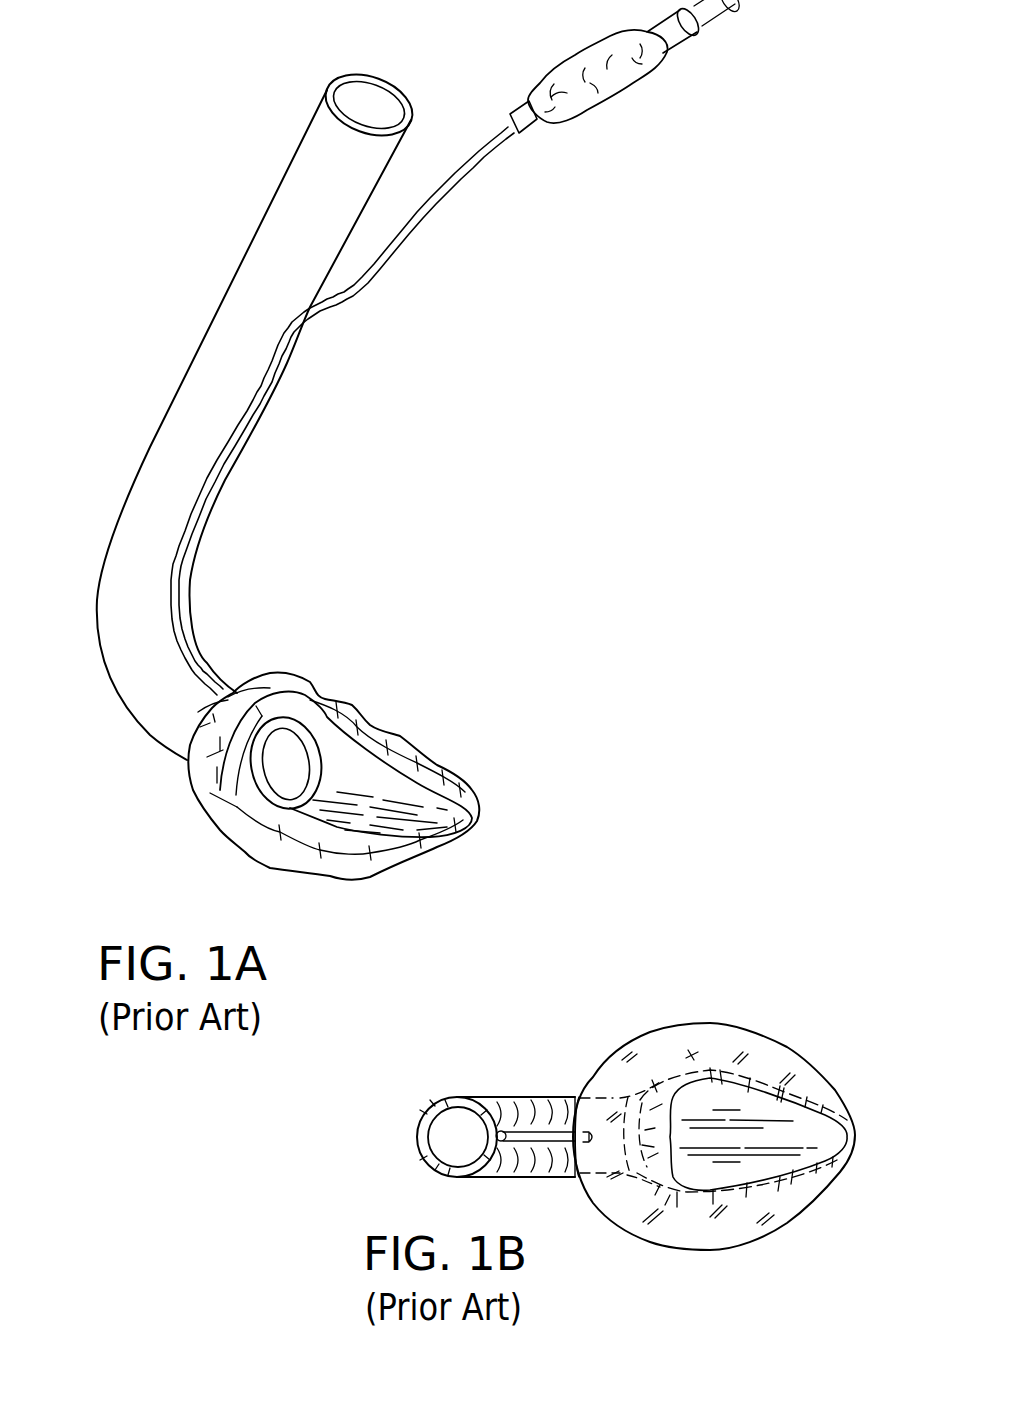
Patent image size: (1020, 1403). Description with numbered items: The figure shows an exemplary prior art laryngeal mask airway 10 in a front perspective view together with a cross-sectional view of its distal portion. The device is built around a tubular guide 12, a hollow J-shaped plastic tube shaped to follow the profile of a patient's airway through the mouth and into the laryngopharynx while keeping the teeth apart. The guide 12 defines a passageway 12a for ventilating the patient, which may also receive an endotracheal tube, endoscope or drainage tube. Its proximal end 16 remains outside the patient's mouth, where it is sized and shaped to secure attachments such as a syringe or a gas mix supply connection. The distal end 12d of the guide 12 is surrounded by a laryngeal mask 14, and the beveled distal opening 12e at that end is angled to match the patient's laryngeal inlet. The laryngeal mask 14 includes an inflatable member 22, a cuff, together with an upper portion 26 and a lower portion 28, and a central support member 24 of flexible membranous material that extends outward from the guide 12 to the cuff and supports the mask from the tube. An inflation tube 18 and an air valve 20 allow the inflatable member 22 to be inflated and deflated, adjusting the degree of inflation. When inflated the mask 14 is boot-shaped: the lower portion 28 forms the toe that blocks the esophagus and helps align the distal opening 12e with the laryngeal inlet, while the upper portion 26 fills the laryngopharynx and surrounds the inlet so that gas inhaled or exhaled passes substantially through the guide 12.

In FIG. 1A, the laryngeal mask airway 10 is at (135, 348).
In FIG. 1B, the laryngeal mask airway 10 is at (498, 1003).
In FIG. 1A, the tubular guide 12 is at (142, 538).
In FIG. 1B, the tubular guide 12 is at (433, 1105).
In FIG. 1A, the passageway 12a is at (376, 93).
In FIG. 1B, the passageway 12a is at (450, 1126).
In FIG. 1A, the distal end 12d is at (217, 680).
In FIG. 1B, the distal end 12d is at (537, 1097).
In FIG. 1A, the distal opening 12e is at (297, 733).
In FIG. 1B, the distal opening 12e is at (695, 1040).
In FIG. 1A, the laryngeal mask 14 is at (390, 724).
In FIG. 1B, the laryngeal mask 14 is at (750, 1012).
In FIG. 1A, the proximal end 16 is at (347, 93).
In FIG. 1B, the proximal end 16 is at (450, 1147).
In FIG. 1A, the inflation tube 18 is at (436, 216).
In FIG. 1B, the inflation tube 18 is at (513, 1105).
In FIG. 1A, the air valve 20 is at (614, 92).
In FIG. 1A, the inflatable member 22 is at (263, 843).
In FIG. 1B, the inflatable member 22 is at (697, 1230).
In FIG. 1A, the central support member 24 is at (412, 790).
In FIG. 1B, the central support member 24 is at (820, 1133).
In FIG. 1A, the upper portion 26 is at (240, 727).
In FIG. 1B, the upper portion 26 is at (588, 1087).
In FIG. 1A, the lower portion 28 is at (440, 848).
In FIG. 1B, the lower portion 28 is at (813, 1080).